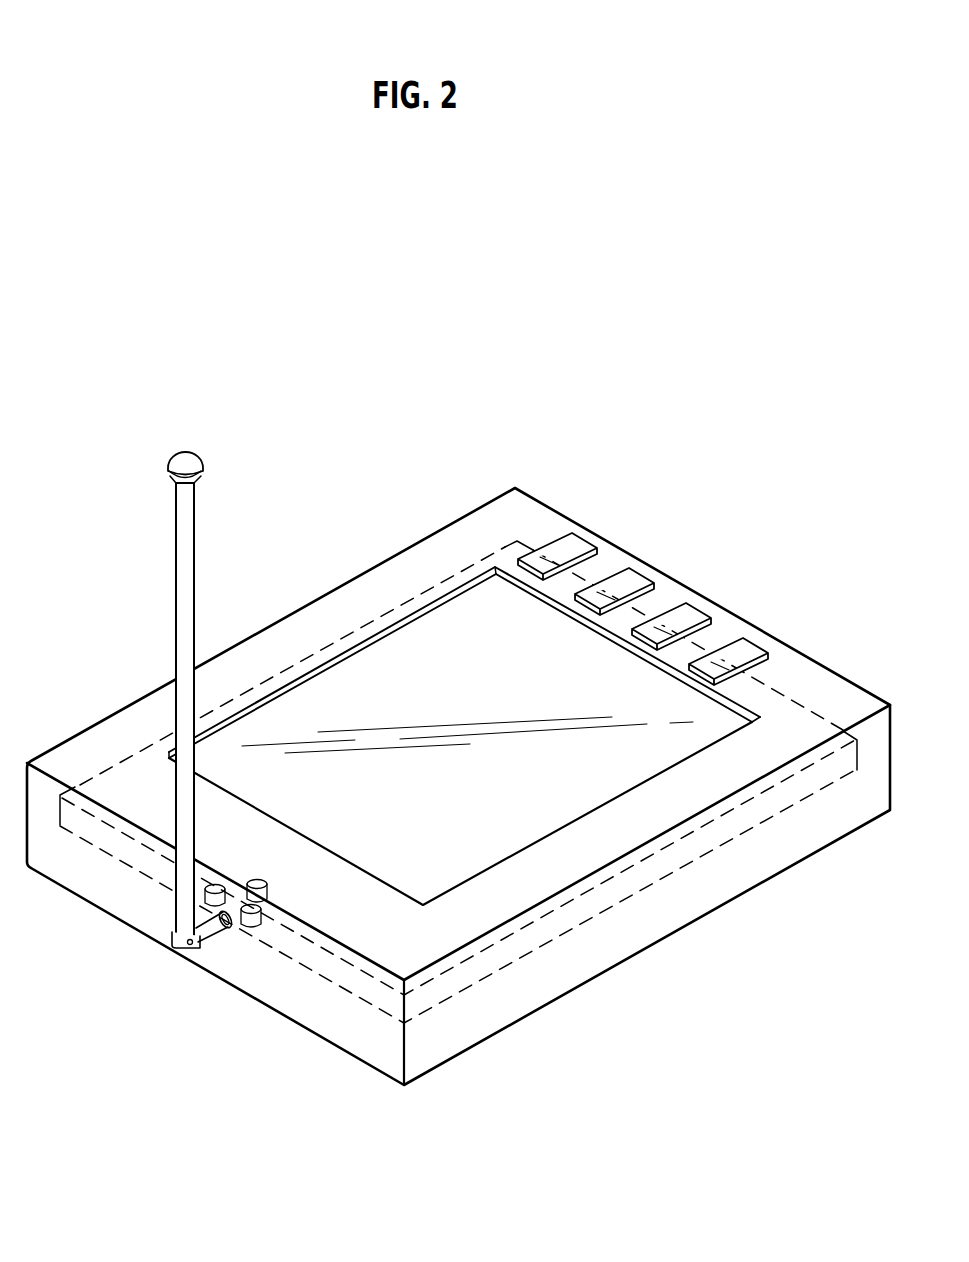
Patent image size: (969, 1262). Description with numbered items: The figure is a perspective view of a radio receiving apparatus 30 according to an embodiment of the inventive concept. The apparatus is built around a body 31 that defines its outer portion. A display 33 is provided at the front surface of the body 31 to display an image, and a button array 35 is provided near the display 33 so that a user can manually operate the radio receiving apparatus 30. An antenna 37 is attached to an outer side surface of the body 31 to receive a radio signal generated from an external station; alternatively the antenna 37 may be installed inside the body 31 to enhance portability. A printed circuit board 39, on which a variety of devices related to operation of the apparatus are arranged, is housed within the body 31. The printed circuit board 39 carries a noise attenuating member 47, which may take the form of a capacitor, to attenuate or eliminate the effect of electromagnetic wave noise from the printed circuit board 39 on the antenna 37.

The radio receiving apparatus 30 is at (563, 361).
The body 31 is at (463, 513).
The display 33 is at (370, 662).
The button array 35 is at (767, 633).
The antenna 37 is at (182, 530).
The printed circuit board 39 is at (368, 986).
The noise attenuating member 47 is at (257, 923).